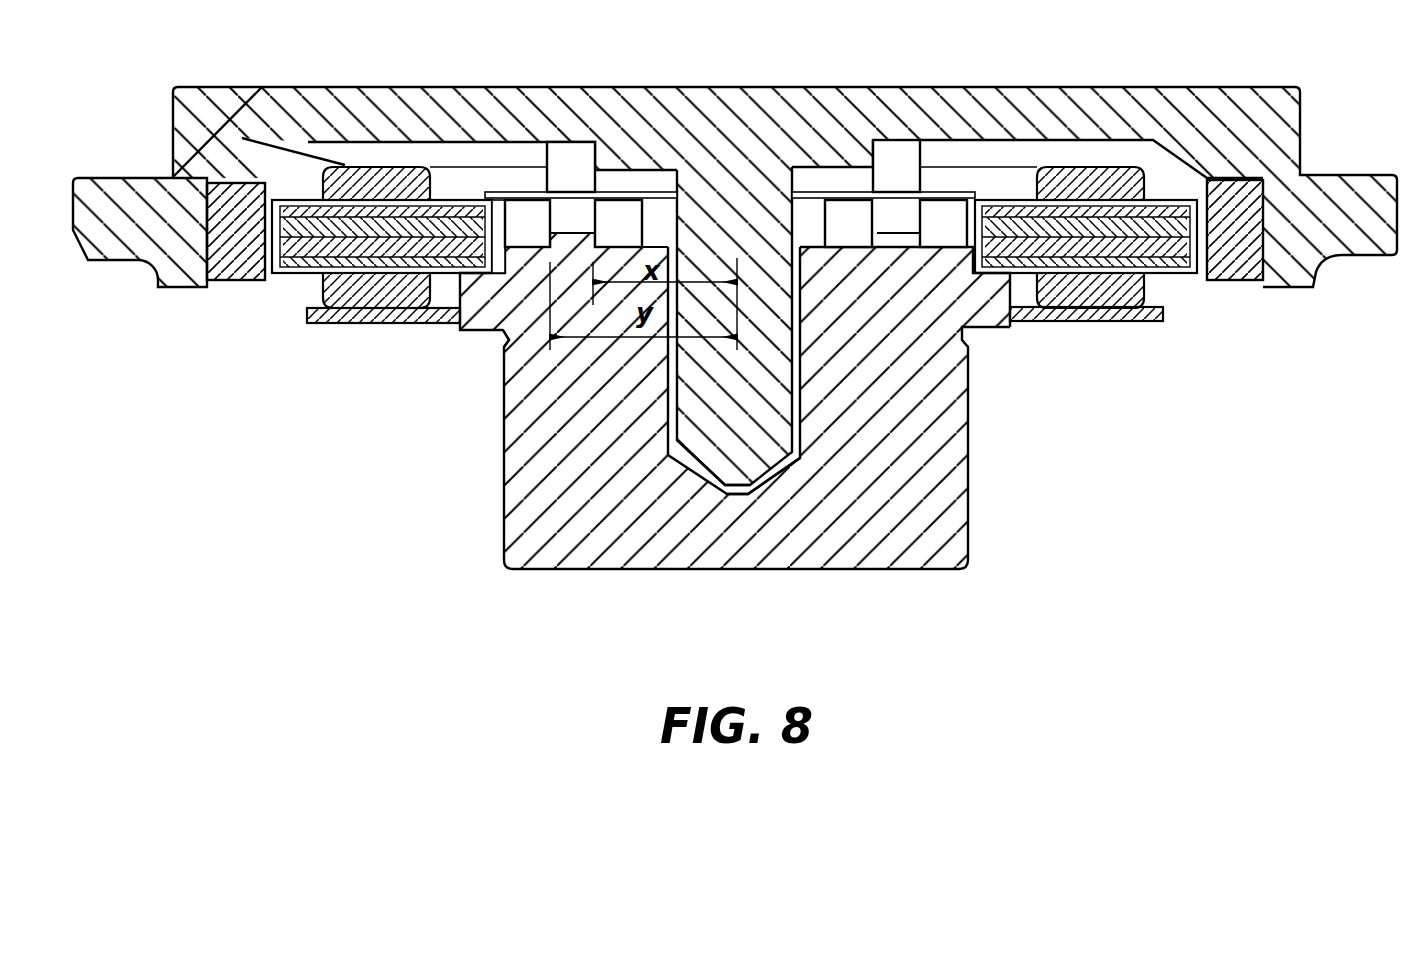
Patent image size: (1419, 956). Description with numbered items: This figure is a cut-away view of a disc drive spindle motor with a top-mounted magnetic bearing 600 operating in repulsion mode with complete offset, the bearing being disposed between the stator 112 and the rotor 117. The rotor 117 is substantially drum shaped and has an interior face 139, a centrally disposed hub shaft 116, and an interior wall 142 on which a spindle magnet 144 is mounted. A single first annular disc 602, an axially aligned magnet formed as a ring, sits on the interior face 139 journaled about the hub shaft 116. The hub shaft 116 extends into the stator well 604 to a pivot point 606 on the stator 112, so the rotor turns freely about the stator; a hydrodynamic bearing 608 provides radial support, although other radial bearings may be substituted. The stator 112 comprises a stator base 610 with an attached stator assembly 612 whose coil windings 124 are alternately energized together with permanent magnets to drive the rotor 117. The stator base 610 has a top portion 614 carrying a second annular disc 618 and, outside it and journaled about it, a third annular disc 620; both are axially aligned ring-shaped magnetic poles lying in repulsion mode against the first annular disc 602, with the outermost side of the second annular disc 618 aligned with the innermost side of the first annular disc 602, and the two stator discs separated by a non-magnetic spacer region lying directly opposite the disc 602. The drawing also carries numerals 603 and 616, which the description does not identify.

The stator 112 is at (890, 545).
The hub shaft 116 is at (752, 400).
The rotor 117 is at (1302, 245).
The coil windings 124 is at (340, 170).
The interior face 139 is at (980, 153).
The interior wall 142 is at (212, 290).
The spindle magnet 144 is at (227, 230).
The magnetic bearing 600 is at (560, 203).
The annular disc 602 is at (583, 148).
The step 603 is at (505, 345).
The stator well 604 is at (757, 489).
The pivot point 606 is at (735, 491).
The hydrodynamic bearing 608 is at (807, 367).
The stator base 610 is at (897, 235).
The stator assembly 612 is at (362, 230).
The top portion 614 is at (552, 262).
The magnet 616 is at (893, 213).
The second annular disc 618 is at (633, 217).
The third annular disc 620 is at (507, 200).